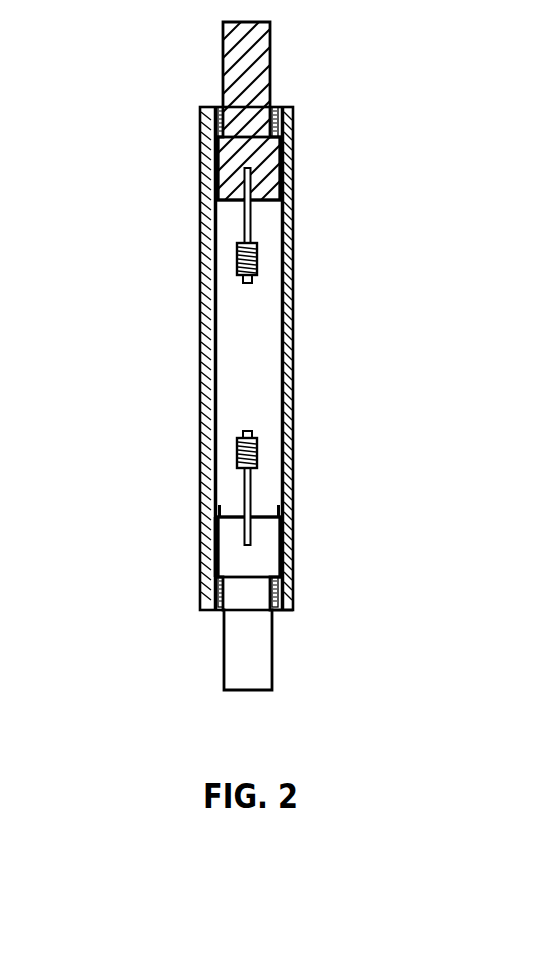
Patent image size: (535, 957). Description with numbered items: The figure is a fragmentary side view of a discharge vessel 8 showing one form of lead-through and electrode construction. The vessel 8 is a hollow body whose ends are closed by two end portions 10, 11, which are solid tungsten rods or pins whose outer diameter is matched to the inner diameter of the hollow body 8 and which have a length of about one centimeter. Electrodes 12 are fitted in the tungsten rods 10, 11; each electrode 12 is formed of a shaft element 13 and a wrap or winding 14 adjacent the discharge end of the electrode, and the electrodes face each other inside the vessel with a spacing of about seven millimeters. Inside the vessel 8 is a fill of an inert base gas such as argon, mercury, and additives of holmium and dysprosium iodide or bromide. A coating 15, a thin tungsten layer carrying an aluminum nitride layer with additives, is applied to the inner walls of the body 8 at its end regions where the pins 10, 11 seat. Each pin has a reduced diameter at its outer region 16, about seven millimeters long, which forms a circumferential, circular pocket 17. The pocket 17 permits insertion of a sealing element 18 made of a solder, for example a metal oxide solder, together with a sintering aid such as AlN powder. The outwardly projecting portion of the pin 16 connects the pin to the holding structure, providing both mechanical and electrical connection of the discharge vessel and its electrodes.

The discharge vessel 8 is at (200, 323).
The end portion 10 is at (247, 557).
The end portion 11 is at (243, 155).
The electrode 12 is at (228, 229).
The shaft element 13 is at (251, 223).
The winding 14 is at (257, 268).
The coating 15 is at (222, 553).
The outer region 16 is at (232, 48).
The pocket 17 is at (282, 614).
The sealing element 18 is at (291, 123).